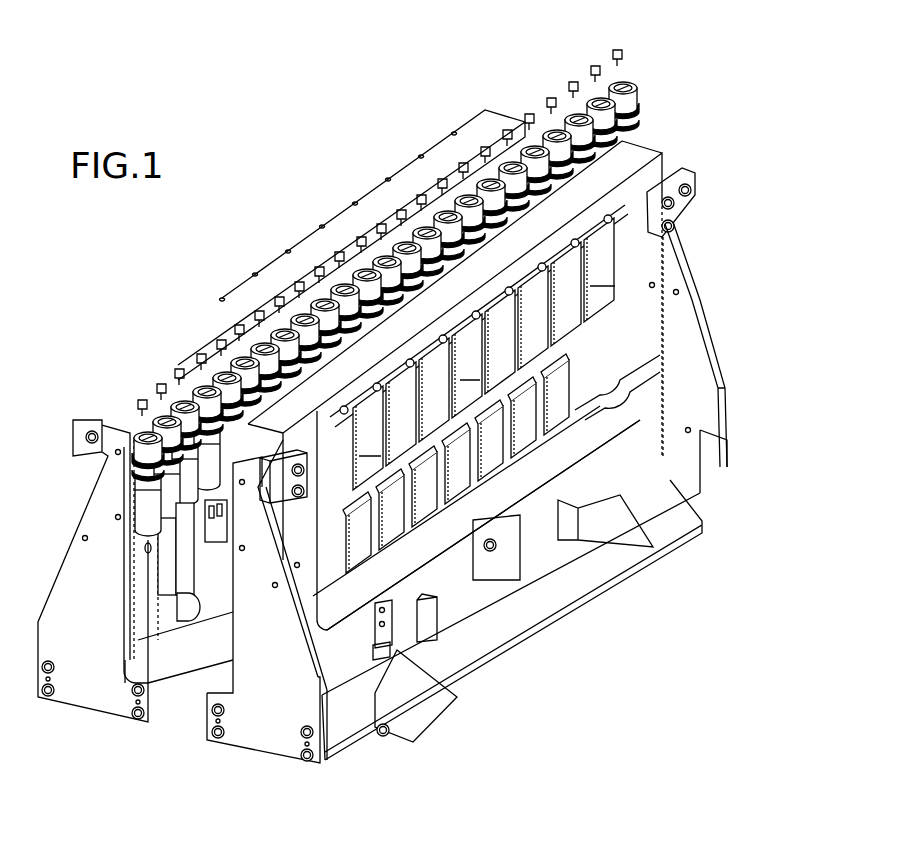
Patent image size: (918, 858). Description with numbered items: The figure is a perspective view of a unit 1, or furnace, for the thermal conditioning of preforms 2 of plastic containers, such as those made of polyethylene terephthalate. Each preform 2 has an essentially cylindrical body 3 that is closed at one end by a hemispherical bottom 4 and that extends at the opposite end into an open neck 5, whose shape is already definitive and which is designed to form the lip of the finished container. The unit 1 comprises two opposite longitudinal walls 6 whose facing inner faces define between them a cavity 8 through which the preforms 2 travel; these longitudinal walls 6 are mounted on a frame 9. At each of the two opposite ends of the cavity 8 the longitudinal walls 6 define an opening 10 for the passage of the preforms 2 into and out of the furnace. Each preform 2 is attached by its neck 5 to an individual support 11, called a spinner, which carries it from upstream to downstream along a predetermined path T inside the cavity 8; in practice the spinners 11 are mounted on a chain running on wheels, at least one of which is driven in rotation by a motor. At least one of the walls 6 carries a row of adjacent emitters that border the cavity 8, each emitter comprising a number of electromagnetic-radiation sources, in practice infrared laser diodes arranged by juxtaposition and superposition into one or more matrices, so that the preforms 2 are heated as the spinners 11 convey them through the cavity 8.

The unit for thermal conditioning 1 is at (280, 187).
The preform 2 is at (131, 508).
The body 3 is at (145, 502).
The bottom 4 is at (143, 533).
The neck 5 is at (130, 465).
The longitudinal wall 6 is at (635, 158).
The cavity 8 is at (383, 243).
The frame 9 is at (693, 352).
The opening 10 is at (540, 127).
The individual support 11 is at (173, 410).
The predetermined path T is at (626, 84).